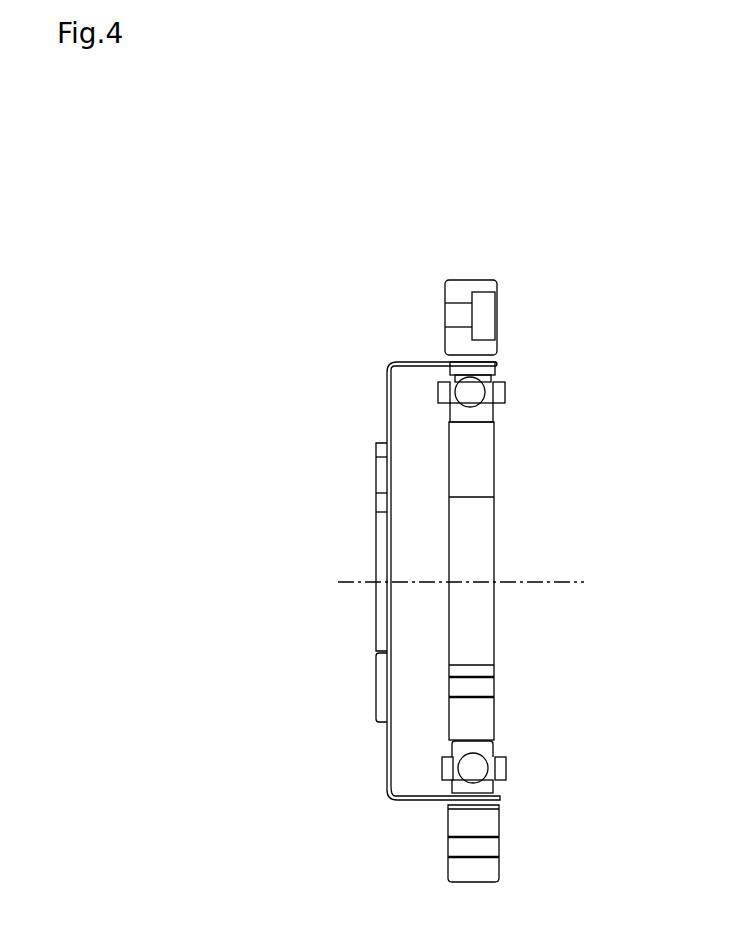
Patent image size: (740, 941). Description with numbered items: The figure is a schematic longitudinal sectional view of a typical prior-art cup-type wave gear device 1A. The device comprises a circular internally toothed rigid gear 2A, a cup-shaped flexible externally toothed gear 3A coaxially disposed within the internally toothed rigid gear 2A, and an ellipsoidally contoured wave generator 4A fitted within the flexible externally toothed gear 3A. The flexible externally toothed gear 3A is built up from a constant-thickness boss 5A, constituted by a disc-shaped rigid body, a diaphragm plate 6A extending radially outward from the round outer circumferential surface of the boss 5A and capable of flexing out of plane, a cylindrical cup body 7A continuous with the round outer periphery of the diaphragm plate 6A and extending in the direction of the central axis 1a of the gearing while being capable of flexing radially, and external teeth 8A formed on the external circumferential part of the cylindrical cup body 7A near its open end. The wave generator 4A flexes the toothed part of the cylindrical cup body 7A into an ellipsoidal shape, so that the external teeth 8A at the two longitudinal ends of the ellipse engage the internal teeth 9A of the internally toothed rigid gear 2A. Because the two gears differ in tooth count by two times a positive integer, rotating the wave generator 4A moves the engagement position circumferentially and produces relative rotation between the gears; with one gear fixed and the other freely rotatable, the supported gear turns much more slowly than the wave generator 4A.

The wave gear device 1A is at (502, 243).
The internally toothed rigid gear 2A is at (508, 346).
The flexible externally toothed gear 3A is at (383, 352).
The wave generator 4A is at (518, 468).
The boss 5A is at (375, 452).
The diaphragm plate 6A is at (387, 405).
The cylindrical cup body 7A is at (417, 360).
The external teeth 8A is at (471, 372).
The internal teeth 9A is at (471, 372).
The rotation axis 1a is at (538, 582).